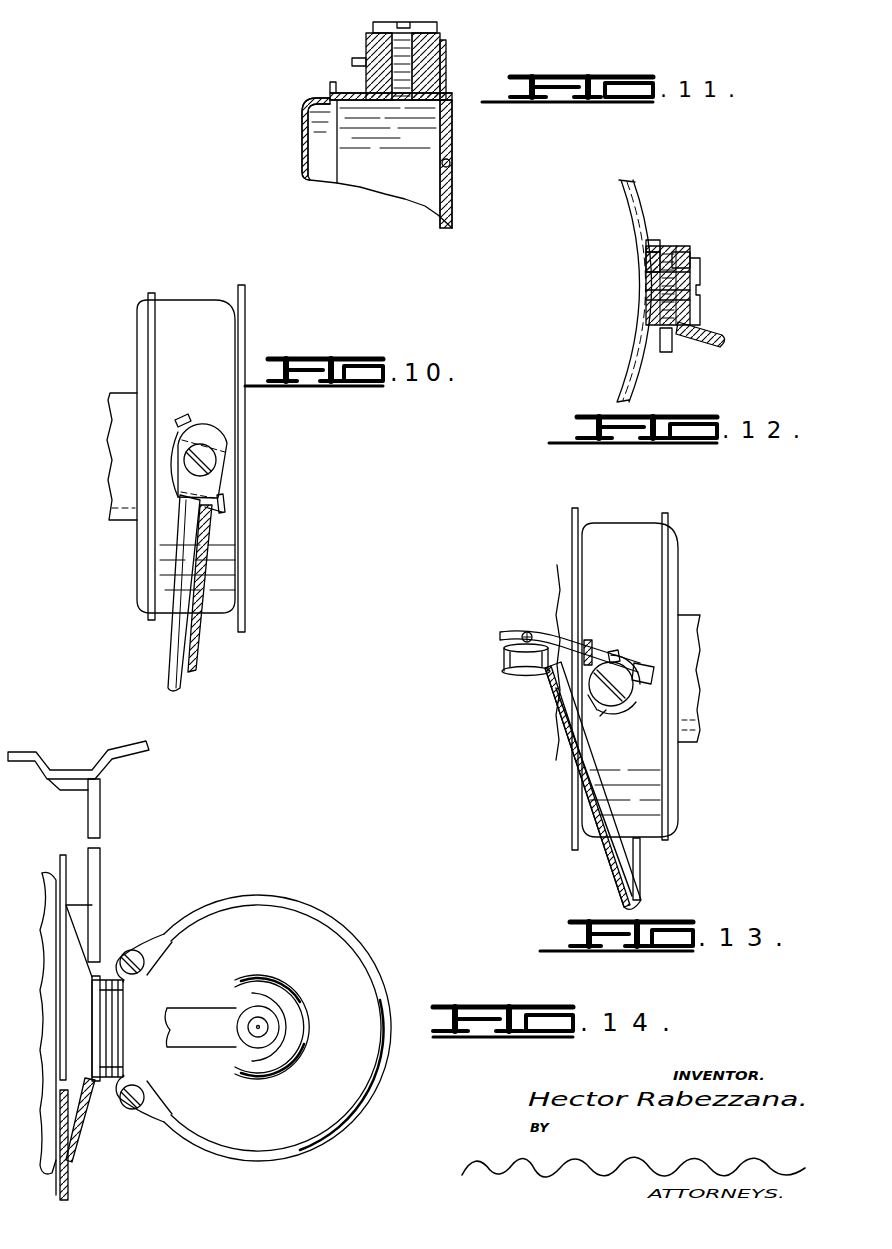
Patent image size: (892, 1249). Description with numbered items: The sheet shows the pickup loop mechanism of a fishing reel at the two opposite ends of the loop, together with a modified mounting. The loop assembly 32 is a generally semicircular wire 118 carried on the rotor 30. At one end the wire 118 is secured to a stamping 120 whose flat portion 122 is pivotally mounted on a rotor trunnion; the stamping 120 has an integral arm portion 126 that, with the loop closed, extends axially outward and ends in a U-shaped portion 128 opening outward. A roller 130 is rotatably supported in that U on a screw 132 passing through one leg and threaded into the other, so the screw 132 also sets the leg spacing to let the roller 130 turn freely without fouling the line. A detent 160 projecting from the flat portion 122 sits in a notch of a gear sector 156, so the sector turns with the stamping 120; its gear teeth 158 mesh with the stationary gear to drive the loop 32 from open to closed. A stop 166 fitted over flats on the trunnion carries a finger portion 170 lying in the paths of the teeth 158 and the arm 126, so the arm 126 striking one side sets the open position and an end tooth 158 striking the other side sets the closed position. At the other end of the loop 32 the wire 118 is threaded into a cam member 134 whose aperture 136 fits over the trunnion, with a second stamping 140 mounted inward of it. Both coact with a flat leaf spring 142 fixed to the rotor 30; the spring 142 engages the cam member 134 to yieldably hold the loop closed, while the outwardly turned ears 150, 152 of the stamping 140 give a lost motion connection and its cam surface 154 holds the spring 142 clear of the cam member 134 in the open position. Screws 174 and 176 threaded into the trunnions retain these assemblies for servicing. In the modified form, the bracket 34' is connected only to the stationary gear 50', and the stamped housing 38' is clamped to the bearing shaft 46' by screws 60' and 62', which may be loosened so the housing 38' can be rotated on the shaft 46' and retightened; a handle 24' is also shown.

In FIG. 11, the rotor 30 is at (324, 93).
In FIG. 12, the rotor 30 is at (654, 216).
In FIG. 10, the loop assembly 32 is at (194, 679).
In FIG. 13, the loop assembly 32 is at (622, 883).
In FIG. 10, the semicircular wire 118 is at (172, 656).
In FIG. 13, the semicircular wire 118 is at (642, 880).
In FIG. 13, the stamping 120 is at (545, 624).
In FIG. 12, the flat portion 122 is at (672, 250).
In FIG. 13, the flat portion 122 is at (636, 688).
In FIG. 12, the arm portion 126 is at (706, 336).
In FIG. 13, the arm portion 126 is at (590, 640).
In FIG. 13, the U-shaped portion 128 is at (505, 638).
In FIG. 13, the roller 130 is at (502, 662).
In FIG. 13, the screw 132 is at (527, 632).
In FIG. 11, the cam member 134 is at (366, 52).
In FIG. 10, the cam member 134 is at (178, 497).
In FIG. 11, the aperture 136 is at (440, 50).
In FIG. 10, the stamping 140 is at (170, 412).
In FIG. 11, the leaf spring 142 is at (446, 68).
In FIG. 10, the leaf spring 142 is at (240, 452).
In FIG. 10, the ear 150 is at (186, 414).
In FIG. 10, the ear 152 is at (215, 506).
In FIG. 10, the cam surface 154 is at (223, 498).
In FIG. 12, the gear sector 156 is at (646, 242).
In FIG. 12, the gear teeth 158 is at (667, 348).
In FIG. 13, the gear teeth 158 is at (615, 651).
In FIG. 12, the detent 160 is at (648, 262).
In FIG. 13, the detent 160 is at (630, 708).
In FIG. 12, the stop 166 is at (684, 260).
In FIG. 13, the finger portion 170 is at (656, 672).
In FIG. 11, the screw 174 is at (437, 30).
In FIG. 10, the screw 174 is at (215, 462).
In FIG. 12, the screw 176 is at (700, 270).
In FIG. 13, the screw 176 is at (556, 700).
In FIG. 14, the handle 24' is at (197, 1045).
In FIG. 14, the bracket 34' is at (91, 851).
In FIG. 14, the housing 38' is at (277, 1013).
In FIG. 14, the bearing shaft 46' is at (137, 1027).
In FIG. 14, the stationary gear 50' is at (111, 967).
In FIG. 14, the screw 60' is at (165, 955).
In FIG. 14, the screw 62' is at (167, 1098).